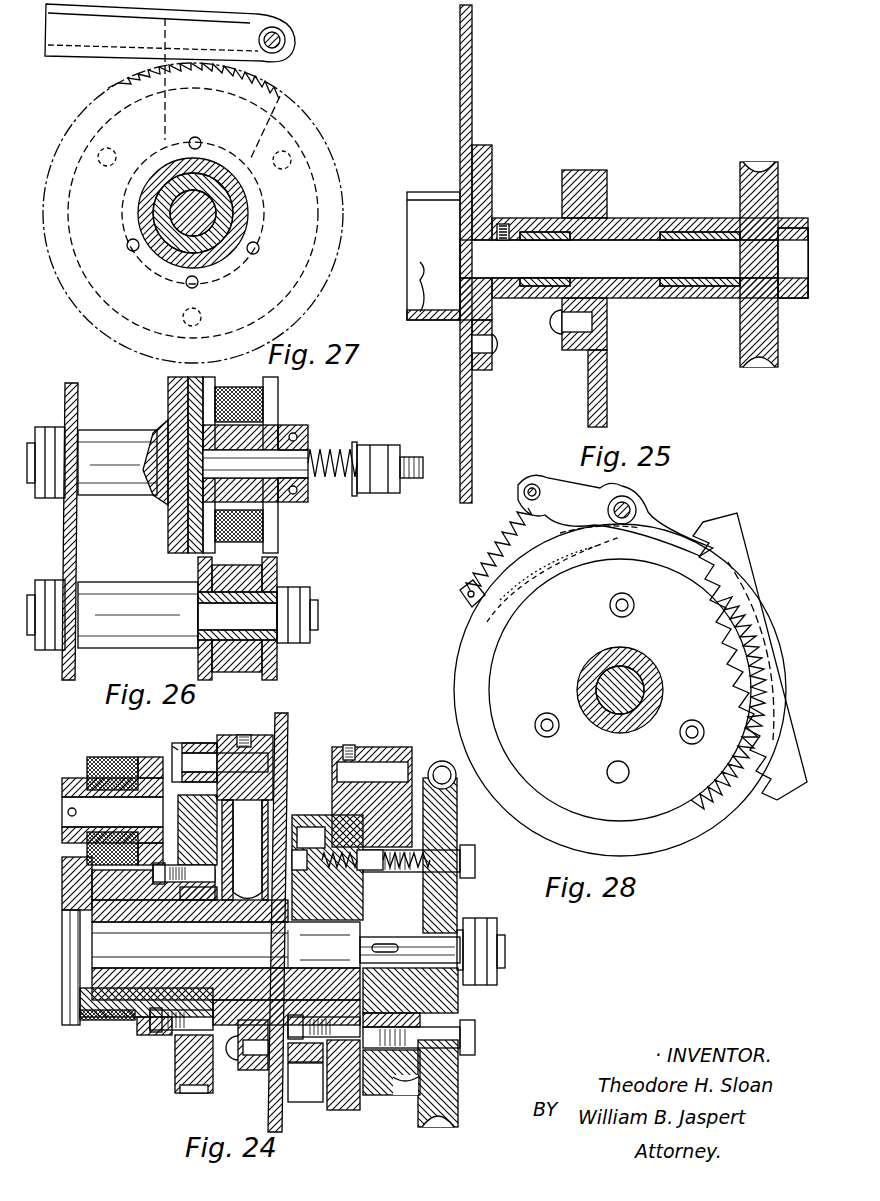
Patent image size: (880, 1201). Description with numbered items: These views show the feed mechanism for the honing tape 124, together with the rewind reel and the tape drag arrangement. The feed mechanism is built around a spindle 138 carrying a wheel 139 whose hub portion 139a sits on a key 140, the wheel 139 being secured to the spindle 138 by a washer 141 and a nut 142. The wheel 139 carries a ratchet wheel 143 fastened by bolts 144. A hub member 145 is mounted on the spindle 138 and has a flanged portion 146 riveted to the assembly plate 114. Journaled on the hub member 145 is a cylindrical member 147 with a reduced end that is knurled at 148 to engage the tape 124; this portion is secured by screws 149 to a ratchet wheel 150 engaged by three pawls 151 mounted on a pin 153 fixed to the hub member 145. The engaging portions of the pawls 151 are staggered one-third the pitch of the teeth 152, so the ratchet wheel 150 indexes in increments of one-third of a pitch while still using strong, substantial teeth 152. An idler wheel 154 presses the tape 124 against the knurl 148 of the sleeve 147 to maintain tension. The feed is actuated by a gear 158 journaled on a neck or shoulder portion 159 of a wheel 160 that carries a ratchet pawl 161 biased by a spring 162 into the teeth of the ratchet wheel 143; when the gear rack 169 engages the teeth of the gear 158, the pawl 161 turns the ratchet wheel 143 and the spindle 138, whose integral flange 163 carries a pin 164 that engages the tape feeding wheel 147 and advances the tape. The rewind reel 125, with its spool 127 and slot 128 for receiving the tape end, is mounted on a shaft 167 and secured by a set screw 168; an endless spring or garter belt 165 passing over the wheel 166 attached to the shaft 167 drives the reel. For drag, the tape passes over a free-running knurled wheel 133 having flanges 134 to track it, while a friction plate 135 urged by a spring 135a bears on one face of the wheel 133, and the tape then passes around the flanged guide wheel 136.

In FIG. 25, the plate 114 is at (607, 380).
In FIG. 24, the plate 114 is at (268, 1118).
In FIG. 24, the honing tape 124 is at (112, 1022).
In FIG. 25, the rewind reel 125 is at (475, 405).
In FIG. 25, the spool 127 is at (412, 276).
In FIG. 25, the slot 128 is at (440, 195).
In FIG. 26, the knurled wheel 133 is at (226, 388).
In FIG. 26, the flanges 134 is at (278, 400).
In FIG. 26, the friction plate 135 is at (175, 380).
In FIG. 26, the spring 135a is at (330, 450).
In FIG. 26, the guide wheel 136 is at (280, 662).
In FIG. 28, the spindle 138 is at (640, 678).
In FIG. 24, the spindle 138 is at (230, 956).
In FIG. 24, the wheel 139 is at (455, 1085).
In FIG. 24, the hub portion 139a is at (420, 1018).
In FIG. 24, the key 140 is at (398, 948).
In FIG. 24, the washer 141 is at (466, 870).
In FIG. 24, the nut 142 is at (478, 922).
In FIG. 28, the ratchet wheel 143 is at (510, 605).
In FIG. 24, the ratchet wheel 143 is at (430, 1125).
In FIG. 24, the bolts 144 is at (475, 1037).
In FIG. 24, the hub member 145 is at (280, 1005).
In FIG. 24, the flanged portion 146 is at (252, 1072).
In FIG. 24, the cylindrical member 147 is at (75, 1006).
In FIG. 24, the knurl 148 is at (140, 1036).
In FIG. 24, the screws 149 is at (168, 1032).
In FIG. 27, the ratchet wheel 150 is at (278, 101).
In FIG. 24, the ratchet wheel 150 is at (175, 1072).
In FIG. 27, the pawls 151 is at (98, 58).
In FIG. 24, the pawls 151 is at (172, 748).
In FIG. 27, the teeth 152 is at (288, 68).
In FIG. 24, the pin 153 is at (172, 770).
In FIG. 24, the idler wheel 154 is at (87, 770).
In FIG. 28, the gear 158 is at (705, 818).
In FIG. 24, the gear 158 is at (305, 835).
In FIG. 28, the neck or shoulder portion 159 is at (664, 702).
In FIG. 24, the neck or shoulder portion 159 is at (265, 878).
In FIG. 24, the wheel 160 is at (347, 1112).
In FIG. 28, the ratchet pawl 161 is at (558, 565).
In FIG. 24, the ratchet pawl 161 is at (370, 748).
In FIG. 28, the spring 162 is at (490, 553).
In FIG. 24, the integral flange 163 is at (62, 872).
In FIG. 24, the pin 164 is at (118, 925).
In FIG. 24, the endless spring or garter belt 165 is at (452, 745).
In FIG. 25, the wheel 166 is at (775, 370).
In FIG. 25, the shaft 167 is at (760, 273).
In FIG. 25, the set screw 168 is at (505, 222).
In FIG. 28, the gear rack 169 is at (750, 556).